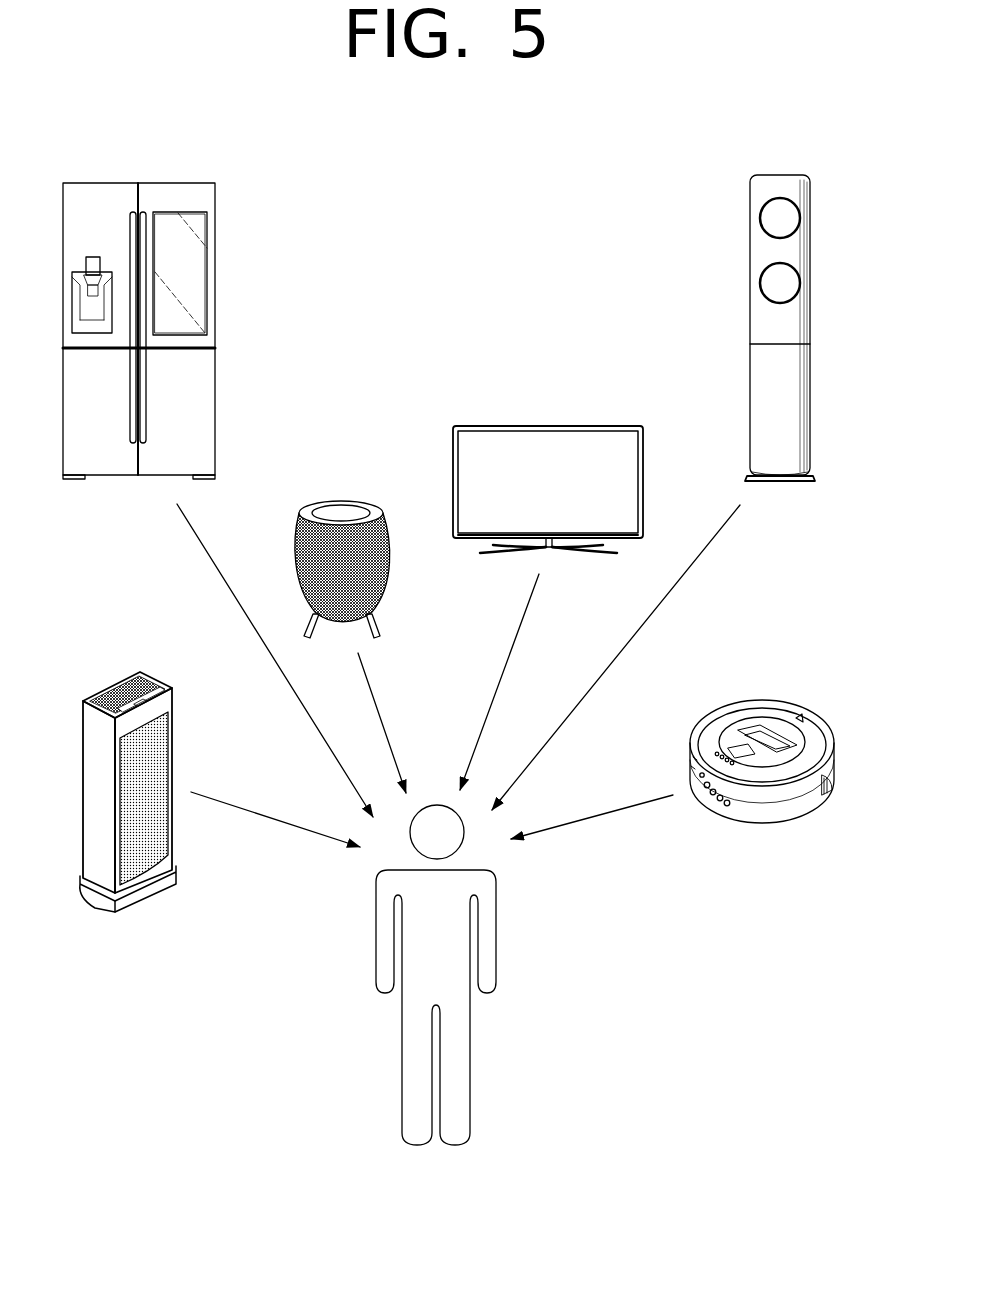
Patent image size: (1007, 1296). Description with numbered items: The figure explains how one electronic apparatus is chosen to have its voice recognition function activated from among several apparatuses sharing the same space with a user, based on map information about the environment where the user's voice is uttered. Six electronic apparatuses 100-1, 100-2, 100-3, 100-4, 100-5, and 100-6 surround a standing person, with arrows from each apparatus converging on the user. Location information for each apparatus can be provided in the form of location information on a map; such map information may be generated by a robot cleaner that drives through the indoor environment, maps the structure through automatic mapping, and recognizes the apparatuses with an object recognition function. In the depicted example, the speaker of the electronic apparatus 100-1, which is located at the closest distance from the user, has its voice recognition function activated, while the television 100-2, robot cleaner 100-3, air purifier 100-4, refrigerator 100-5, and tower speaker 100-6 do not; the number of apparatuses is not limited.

The electronic apparatus 100-1 is at (343, 512).
The electronic apparatus 100-2 is at (548, 425).
The electronic apparatus 100-3 is at (777, 704).
The electronic apparatus 100-4 is at (122, 670).
The electronic apparatus 100-5 is at (215, 193).
The electronic apparatus 100-6 is at (752, 233).